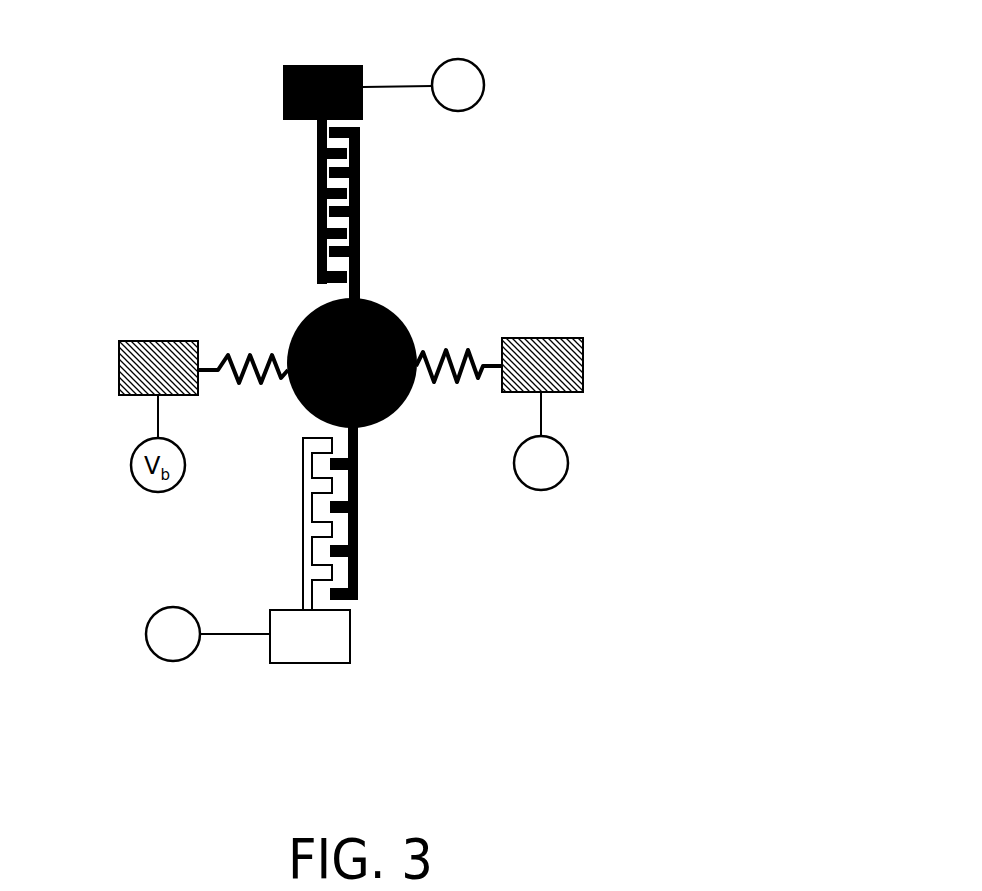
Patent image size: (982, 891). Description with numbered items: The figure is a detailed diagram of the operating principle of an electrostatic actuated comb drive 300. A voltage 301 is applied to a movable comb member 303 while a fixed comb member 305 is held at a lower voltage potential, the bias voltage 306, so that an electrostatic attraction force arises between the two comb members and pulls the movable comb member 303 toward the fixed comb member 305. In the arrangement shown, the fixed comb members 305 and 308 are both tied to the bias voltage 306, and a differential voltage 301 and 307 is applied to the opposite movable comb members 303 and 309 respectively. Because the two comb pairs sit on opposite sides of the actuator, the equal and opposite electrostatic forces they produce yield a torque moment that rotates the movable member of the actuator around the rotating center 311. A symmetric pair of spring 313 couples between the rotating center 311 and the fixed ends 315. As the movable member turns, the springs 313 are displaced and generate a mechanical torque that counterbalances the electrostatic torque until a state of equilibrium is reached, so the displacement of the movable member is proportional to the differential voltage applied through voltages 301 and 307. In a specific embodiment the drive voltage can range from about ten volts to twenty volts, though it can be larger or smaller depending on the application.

The electrostatic actuated comb drive 300 is at (788, 137).
The voltage 301 is at (484, 87).
The movable comb member 303 is at (317, 182).
The fixed comb member 305 is at (360, 175).
The bias voltage 306 is at (568, 465).
The differential voltage 307 is at (148, 643).
The fixed comb member 308 is at (358, 483).
The movable comb member 309 is at (303, 512).
The rotating center 311 is at (386, 310).
The spring 313 is at (247, 357).
The fixed ends 315 is at (583, 363).